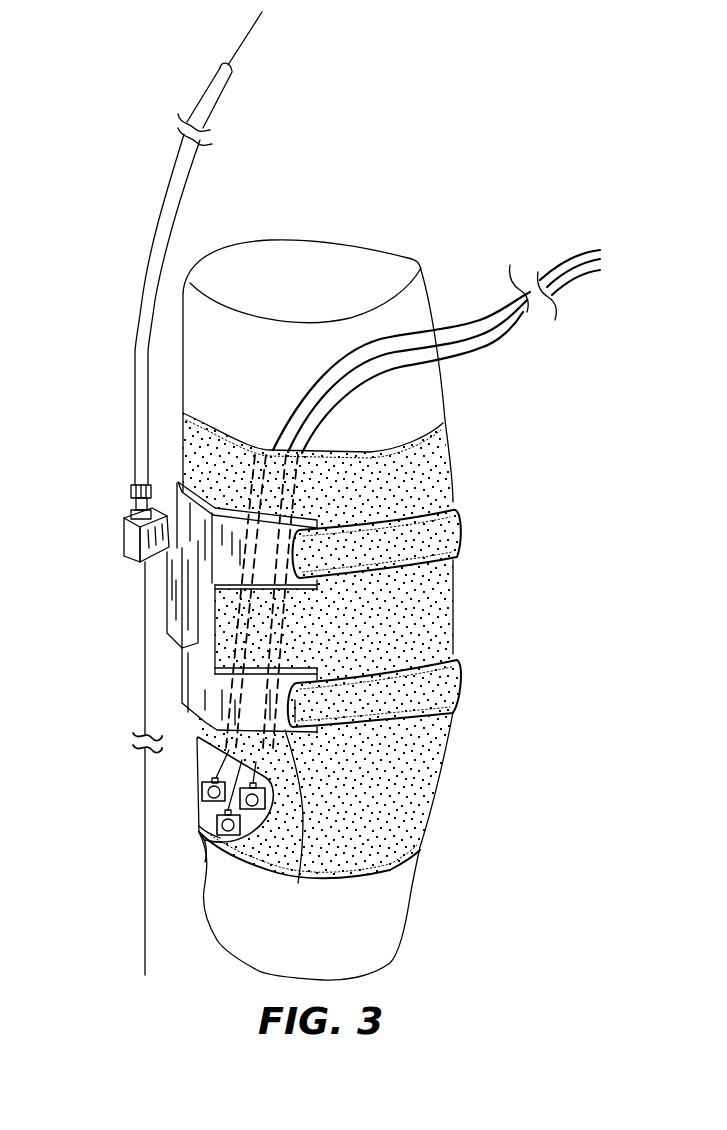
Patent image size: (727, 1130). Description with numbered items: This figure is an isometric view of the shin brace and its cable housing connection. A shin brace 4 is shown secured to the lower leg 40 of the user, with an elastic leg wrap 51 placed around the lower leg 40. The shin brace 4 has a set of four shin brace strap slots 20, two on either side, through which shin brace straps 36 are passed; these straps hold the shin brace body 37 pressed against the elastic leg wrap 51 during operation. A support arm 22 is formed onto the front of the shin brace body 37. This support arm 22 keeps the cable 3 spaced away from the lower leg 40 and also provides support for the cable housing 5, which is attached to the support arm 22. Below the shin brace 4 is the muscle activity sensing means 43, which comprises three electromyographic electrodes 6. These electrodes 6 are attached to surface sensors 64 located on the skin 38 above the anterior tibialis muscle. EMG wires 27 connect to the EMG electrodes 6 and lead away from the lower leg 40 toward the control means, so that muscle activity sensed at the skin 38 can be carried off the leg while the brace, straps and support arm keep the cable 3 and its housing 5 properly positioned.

The cable 3 is at (143, 608).
The shin brace 4 is at (184, 493).
The cable housing 5 is at (138, 474).
The electromyographic (EMG) electrodes 6 is at (202, 788).
The shin brace strap slots 20 is at (256, 821).
The support arm 22 is at (130, 541).
The EMG wires 27 is at (388, 367).
The shin brace straps 36 is at (446, 692).
The shin brace body 37 is at (190, 688).
The skin 38 is at (200, 874).
The lower leg 40 is at (418, 892).
The muscle activity sensing means 43 is at (176, 802).
The elastic leg wrap 51 is at (197, 445).
The surface sensors 64 is at (200, 802).